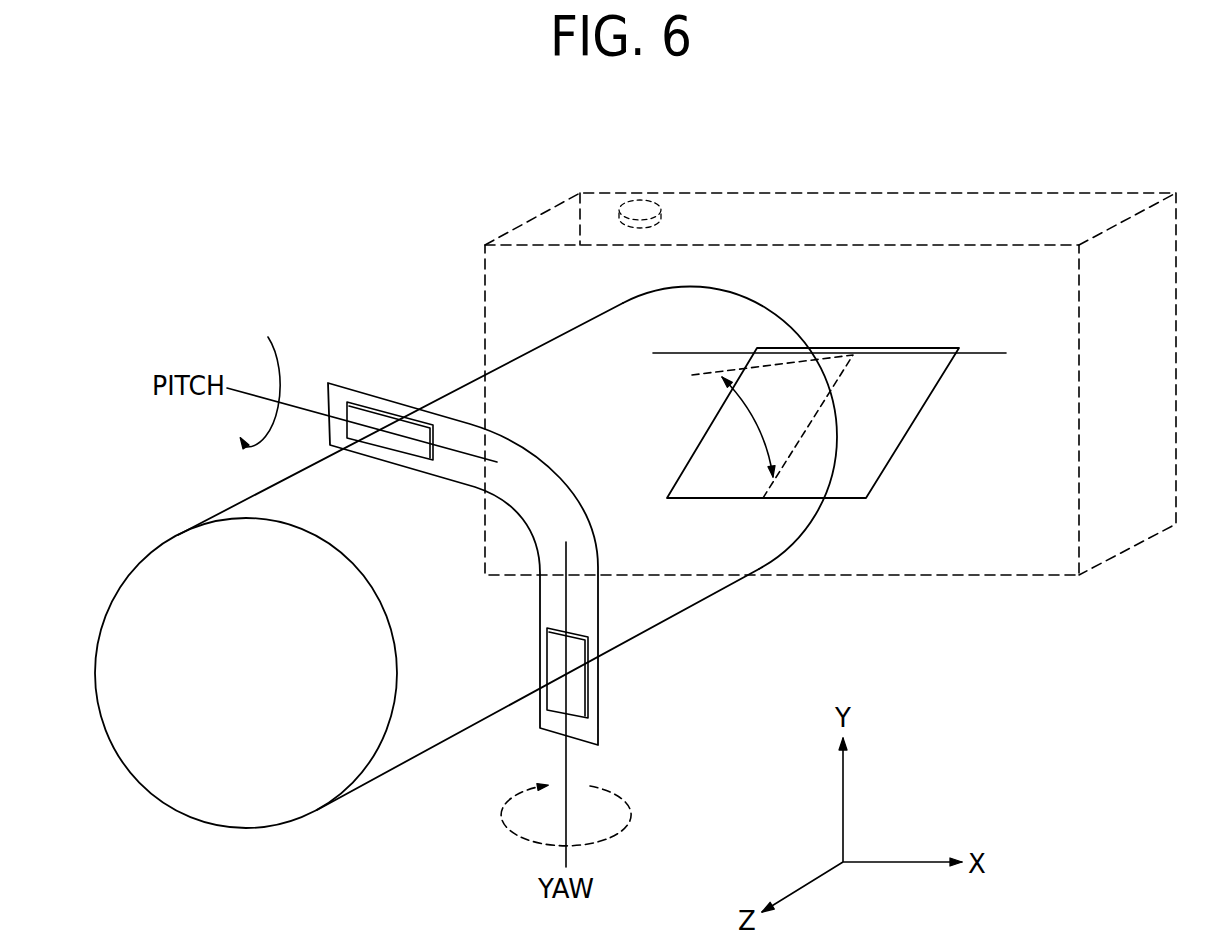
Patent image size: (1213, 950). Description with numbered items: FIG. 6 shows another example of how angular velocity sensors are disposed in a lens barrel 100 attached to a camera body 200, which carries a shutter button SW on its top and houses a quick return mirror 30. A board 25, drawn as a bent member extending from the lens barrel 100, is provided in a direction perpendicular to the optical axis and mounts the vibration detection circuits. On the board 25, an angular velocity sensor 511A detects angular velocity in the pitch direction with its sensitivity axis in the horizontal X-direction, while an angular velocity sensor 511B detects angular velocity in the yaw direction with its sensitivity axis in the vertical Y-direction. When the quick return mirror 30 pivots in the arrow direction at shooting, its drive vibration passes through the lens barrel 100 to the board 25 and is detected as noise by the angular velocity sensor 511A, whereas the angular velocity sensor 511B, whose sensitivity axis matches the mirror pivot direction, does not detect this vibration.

The board 25 is at (552, 512).
The quick return mirror 30 is at (851, 480).
The lens barrel 100 is at (405, 743).
The camera body 200 is at (982, 553).
The angular velocity sensor 511A is at (382, 418).
The angular velocity sensor 511B is at (577, 692).
The shutter button SW is at (652, 193).